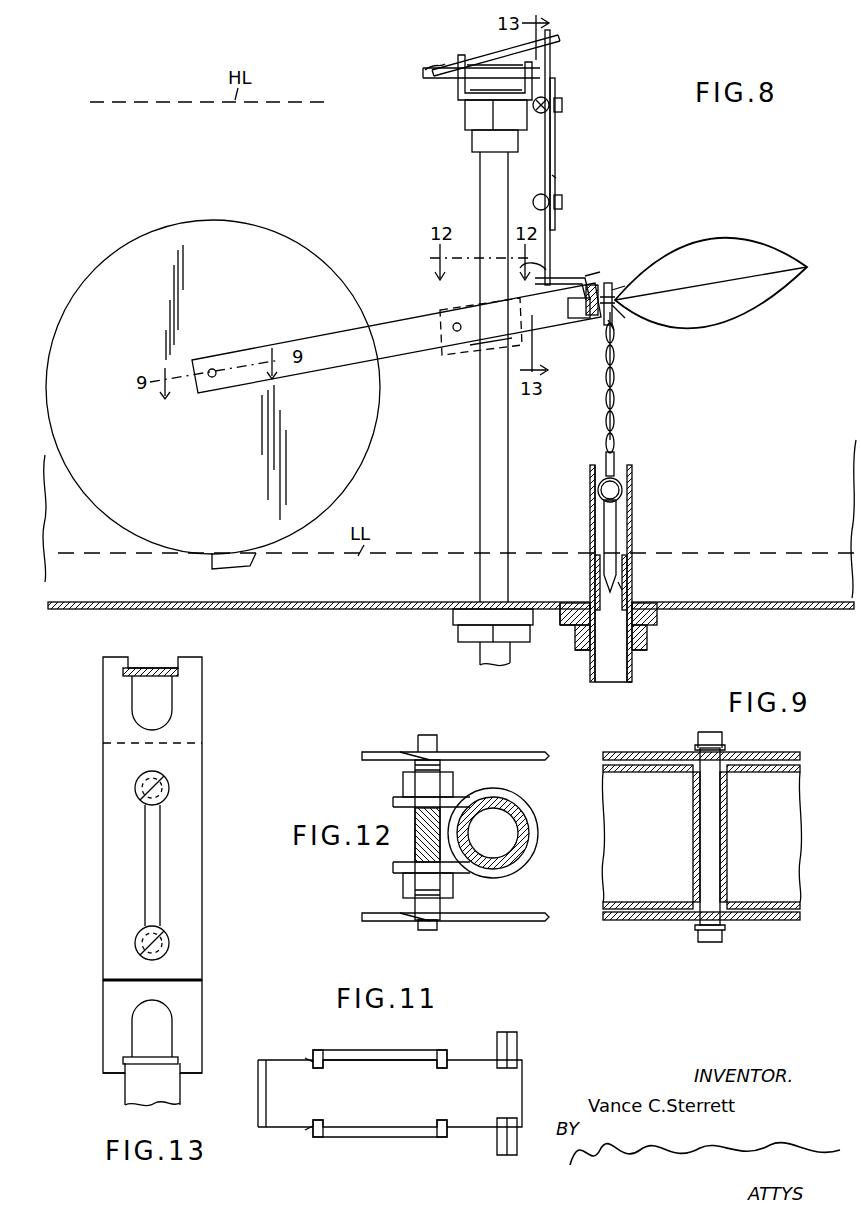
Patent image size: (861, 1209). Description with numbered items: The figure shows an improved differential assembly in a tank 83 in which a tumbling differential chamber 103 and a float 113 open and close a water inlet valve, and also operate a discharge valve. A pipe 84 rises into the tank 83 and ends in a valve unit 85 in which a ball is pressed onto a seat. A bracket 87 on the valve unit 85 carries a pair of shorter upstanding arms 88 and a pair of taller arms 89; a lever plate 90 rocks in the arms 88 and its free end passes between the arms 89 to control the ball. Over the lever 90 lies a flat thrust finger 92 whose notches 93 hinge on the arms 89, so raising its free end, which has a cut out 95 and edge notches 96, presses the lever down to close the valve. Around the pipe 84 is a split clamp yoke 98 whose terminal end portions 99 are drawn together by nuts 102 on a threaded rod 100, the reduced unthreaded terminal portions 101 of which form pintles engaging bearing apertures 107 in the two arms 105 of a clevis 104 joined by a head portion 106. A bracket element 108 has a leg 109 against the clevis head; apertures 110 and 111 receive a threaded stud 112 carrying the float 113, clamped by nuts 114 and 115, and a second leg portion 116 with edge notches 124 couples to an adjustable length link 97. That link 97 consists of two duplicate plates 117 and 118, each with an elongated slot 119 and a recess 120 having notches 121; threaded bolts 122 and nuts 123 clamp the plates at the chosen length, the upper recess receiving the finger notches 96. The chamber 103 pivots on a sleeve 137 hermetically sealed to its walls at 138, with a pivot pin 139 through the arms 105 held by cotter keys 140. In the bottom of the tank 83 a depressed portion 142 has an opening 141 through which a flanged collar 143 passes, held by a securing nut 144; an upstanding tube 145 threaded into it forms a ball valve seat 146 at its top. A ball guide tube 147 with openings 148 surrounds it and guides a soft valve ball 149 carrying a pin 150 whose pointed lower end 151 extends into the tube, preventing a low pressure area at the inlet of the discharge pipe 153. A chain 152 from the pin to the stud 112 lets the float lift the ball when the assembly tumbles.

In FIG. 8, the tank 83 is at (451, 634).
In FIG. 8, the pipe 84 is at (480, 518).
In FIG. 12, the pipe 84 is at (523, 828).
In FIG. 8, the valve unit 85 is at (468, 147).
In FIG. 8, the bracket 87 is at (463, 111).
In FIG. 11, the bracket 87 is at (410, 1052).
In FIG. 11, the upstanding arms 88 is at (442, 1140).
In FIG. 11, the upstanding arms 89 is at (320, 1055).
In FIG. 8, the lever plate 90 is at (430, 76).
In FIG. 8, the thrust finger 92 is at (482, 58).
In FIG. 13, the thrust finger 92 is at (143, 666).
In FIG. 11, the thrust finger 92 is at (392, 1135).
In FIG. 8, the notches 93 is at (455, 66).
In FIG. 11, the notches 93 is at (312, 1060).
In FIG. 11, the cut out 95 is at (452, 1062).
In FIG. 11, the notches 96 is at (524, 1066).
In FIG. 8, the adjustable length link 97 is at (565, 170).
In FIG. 13, the adjustable length link 97 is at (100, 836).
In FIG. 11, the adjustable length link 97 is at (528, 1044).
In FIG. 8, the clamp yoke 98 is at (486, 358).
In FIG. 12, the clamp yoke 98 is at (543, 870).
In FIG. 12, the terminal end portions 99 is at (392, 868).
In FIG. 12, the threaded rod 100 is at (412, 825).
In FIG. 12, the reduced unthreaded terminal portions 101 is at (432, 745).
In FIG. 12, the nuts 102 is at (403, 785).
In FIG. 8, the tumbling differential chamber 103 is at (250, 222).
In FIG. 8, the clevis 104 is at (390, 322).
In FIG. 8, the arms 105 is at (428, 342).
In FIG. 12, the arms 105 is at (520, 750).
In FIG. 9, the arms 105 is at (652, 750).
In FIG. 8, the head portion 106 is at (618, 286).
In FIG. 12, the bearing apertures 107 is at (412, 750).
In FIG. 8, the bracket element 108 is at (572, 270).
In FIG. 13, the bracket element 108 is at (118, 1104).
In FIG. 8, the leg 109 is at (596, 283).
In FIG. 8, the aperture 110 is at (606, 325).
In FIG. 8, the aperture 111 is at (616, 300).
In FIG. 8, the threaded stud 112 is at (616, 306).
In FIG. 8, the float 113 is at (760, 312).
In FIG. 8, the nut 114 is at (614, 322).
In FIG. 8, the nut 115 is at (575, 318).
In FIG. 8, the second leg portion 116 is at (592, 270).
In FIG. 13, the second leg portion 116 is at (170, 1098).
In FIG. 8, the plate 117 is at (552, 62).
In FIG. 13, the plate 117 is at (190, 716).
In FIG. 8, the plate 118 is at (558, 183).
In FIG. 13, the plate 118 is at (190, 1010).
In FIG. 13, the elongated slot 119 is at (160, 890).
In FIG. 13, the recess 120 is at (128, 708).
In FIG. 13, the notches 121 is at (182, 666).
In FIG. 8, the threaded bolts 122 is at (564, 102).
In FIG. 8, the nuts 123 is at (564, 108).
In FIG. 8, the edge notches 124 is at (560, 272).
In FIG. 9, the sleeve 137 is at (728, 878).
In FIG. 9, the hermetic seal 138 is at (694, 775).
In FIG. 9, the pivot pin 139 is at (710, 843).
In FIG. 9, the cotter keys 140 is at (726, 746).
In FIG. 8, the opening 141 is at (648, 630).
In FIG. 8, the depressed portion 142 is at (568, 632).
In FIG. 8, the flanged collar 143 is at (645, 608).
In FIG. 8, the securing nut 144 is at (648, 640).
In FIG. 8, the upstanding tube 145 is at (626, 592).
In FIG. 8, the ball valve seat 146 is at (624, 562).
In FIG. 8, the ball guide tube 147 is at (632, 476).
In FIG. 8, the openings 148 is at (590, 545).
In FIG. 8, the valve ball 149 is at (600, 482).
In FIG. 8, the pin 150 is at (616, 460).
In FIG. 8, the pointed lower end 151 is at (604, 582).
In FIG. 8, the chain 152 is at (606, 400).
In FIG. 8, the pipe 153 is at (586, 653).